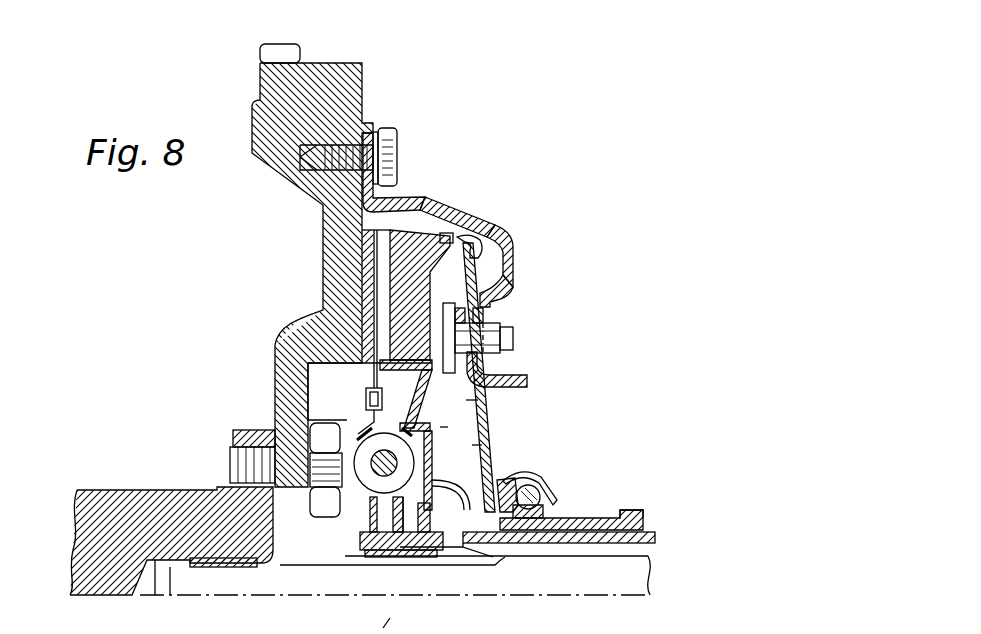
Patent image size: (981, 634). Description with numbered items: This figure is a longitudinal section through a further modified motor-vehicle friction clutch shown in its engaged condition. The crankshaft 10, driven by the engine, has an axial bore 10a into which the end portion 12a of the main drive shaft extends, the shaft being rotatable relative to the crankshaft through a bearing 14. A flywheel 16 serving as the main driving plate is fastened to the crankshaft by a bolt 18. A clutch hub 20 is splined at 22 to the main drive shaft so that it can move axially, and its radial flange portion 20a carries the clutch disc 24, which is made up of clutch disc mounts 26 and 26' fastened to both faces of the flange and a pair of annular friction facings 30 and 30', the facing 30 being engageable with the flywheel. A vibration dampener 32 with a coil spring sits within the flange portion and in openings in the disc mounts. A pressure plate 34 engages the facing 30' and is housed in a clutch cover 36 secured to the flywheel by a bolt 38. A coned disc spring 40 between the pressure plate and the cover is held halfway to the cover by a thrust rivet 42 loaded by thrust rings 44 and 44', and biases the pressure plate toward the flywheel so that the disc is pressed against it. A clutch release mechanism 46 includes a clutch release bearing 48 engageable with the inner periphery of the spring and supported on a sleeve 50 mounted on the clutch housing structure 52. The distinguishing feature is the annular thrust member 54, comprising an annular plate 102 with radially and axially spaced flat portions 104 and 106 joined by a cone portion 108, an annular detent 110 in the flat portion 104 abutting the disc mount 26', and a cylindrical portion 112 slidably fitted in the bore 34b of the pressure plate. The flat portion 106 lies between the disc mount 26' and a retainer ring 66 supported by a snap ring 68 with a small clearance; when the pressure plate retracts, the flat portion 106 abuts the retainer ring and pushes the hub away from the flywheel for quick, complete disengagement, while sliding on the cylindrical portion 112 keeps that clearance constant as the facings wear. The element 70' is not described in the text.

The crankshaft 10 is at (148, 492).
The axial bore 10a is at (157, 567).
The end portion 12a is at (252, 587).
The bearing 14 is at (207, 567).
The flywheel 16 is at (327, 208).
The bolt 18 is at (240, 460).
The clutch hub 20 is at (360, 538).
The flange portion 20a is at (372, 518).
The spline 22 is at (363, 558).
The clutch disc 24 is at (310, 366).
The clutch disc mount 26 is at (344, 408).
The clutch disc mount 26' is at (425, 435).
The clutch friction facing 30 is at (395, 181).
The clutch friction facing 30' is at (415, 277).
The vibration dampener 32 is at (363, 432).
The pressure plate 34 is at (457, 210).
The protruded portion (bore) 34b is at (507, 380).
The clutch cover 36 is at (485, 222).
The bolt 38 is at (388, 130).
The coned disc spring 40 is at (475, 414).
The thrust rivet 42 is at (515, 336).
The thrust ring 44 is at (502, 255).
The thrust ring 44' is at (520, 293).
The clutch release mechanism 46 is at (573, 477).
The clutch release bearing 48 is at (534, 472).
The sleeve 50 is at (573, 518).
The clutch housing structure 52 is at (605, 512).
The annular thrust member 54 is at (446, 427).
The retainer ring 66 is at (443, 520).
The snap ring 68 is at (447, 543).
The shaft end 70' is at (371, 626).
The annular plate 102 is at (463, 447).
The flat portion 104 is at (460, 473).
The flat portion 106 is at (410, 550).
The cone portion 108 is at (467, 500).
The annular detent 110 is at (478, 401).
The cylindrical portion 112 is at (400, 372).